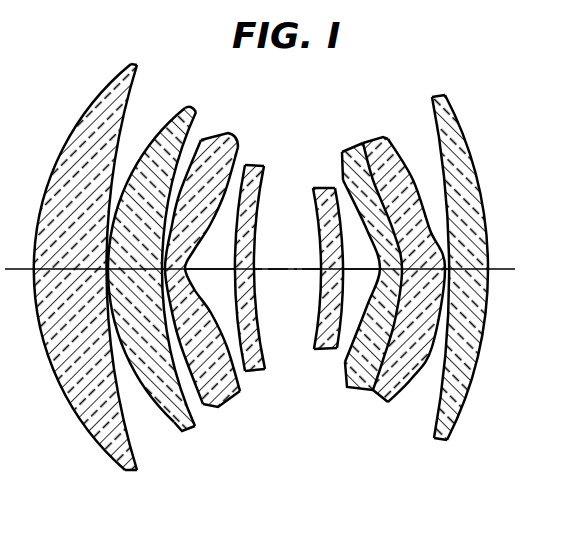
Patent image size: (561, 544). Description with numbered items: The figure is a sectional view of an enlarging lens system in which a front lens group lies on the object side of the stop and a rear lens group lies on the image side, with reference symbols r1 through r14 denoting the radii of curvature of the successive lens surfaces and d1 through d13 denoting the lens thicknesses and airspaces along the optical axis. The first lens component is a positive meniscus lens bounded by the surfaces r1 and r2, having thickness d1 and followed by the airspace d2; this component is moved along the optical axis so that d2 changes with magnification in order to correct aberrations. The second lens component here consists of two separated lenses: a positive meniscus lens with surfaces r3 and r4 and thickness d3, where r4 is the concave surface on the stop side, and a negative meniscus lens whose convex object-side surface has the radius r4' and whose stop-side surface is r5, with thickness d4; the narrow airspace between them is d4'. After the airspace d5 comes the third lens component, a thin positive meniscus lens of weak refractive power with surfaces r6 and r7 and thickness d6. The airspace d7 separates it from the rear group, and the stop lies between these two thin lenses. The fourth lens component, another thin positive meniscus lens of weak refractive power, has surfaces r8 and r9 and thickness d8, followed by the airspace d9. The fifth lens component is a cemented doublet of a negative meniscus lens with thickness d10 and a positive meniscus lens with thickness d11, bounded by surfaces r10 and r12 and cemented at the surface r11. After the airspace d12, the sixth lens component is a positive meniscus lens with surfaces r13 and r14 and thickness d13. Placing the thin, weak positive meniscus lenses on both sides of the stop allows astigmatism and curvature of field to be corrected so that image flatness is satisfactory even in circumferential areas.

The thickness of first lens d1 is at (101, 280).
The airspace between first and second lens components d2 is at (84, 229).
The thickness of second lens d3 is at (163, 291).
The airspace between positive and negative meniscus lenses of second lens component d4' is at (146, 229).
The thickness of third lens d4 is at (215, 294).
The airspace between second and third lens components d5 is at (210, 251).
The thickness of fourth lens d6 is at (270, 289).
The airspace between third and fourth lens components d7 is at (287, 251).
The thickness of fifth lens d8 is at (315, 296).
The airspace between fourth and fifth lens components d9 is at (361, 255).
The thickness of sixth lens d10 is at (360, 296).
The thickness of seventh lens d11 is at (407, 286).
The airspace between fifth and sixth lens components d12 is at (493, 236).
The thickness of eighth lens d13 is at (476, 282).
The radius of curvature of first lens surface r1 is at (82, 280).
The radius of curvature of second lens surface r2 is at (138, 280).
The radius of curvature of third lens surface r3 is at (146, 284).
The radius of curvature of concave stop-side surface of positive meniscus lens r4 is at (190, 294).
The radius of curvature of convex object-side surface of negative meniscus lens r4' is at (205, 298).
The radius of curvature of fifth lens surface r5 is at (225, 292).
The radius of curvature of sixth lens surface r6 is at (257, 289).
The radius of curvature of seventh lens surface r7 is at (279, 273).
The radius of curvature of eighth lens surface r8 is at (304, 296).
The radius of curvature of ninth lens surface r9 is at (326, 288).
The radius of curvature of tenth lens surface r10 is at (349, 304).
The radius of curvature of cemented surface of fifth lens component r11 is at (377, 296).
The radius of curvature of twelfth lens surface r12 is at (416, 287).
The radius of curvature of thirteenth lens surface r13 is at (427, 283).
The radius of curvature of fourteenth lens surface r14 is at (473, 279).